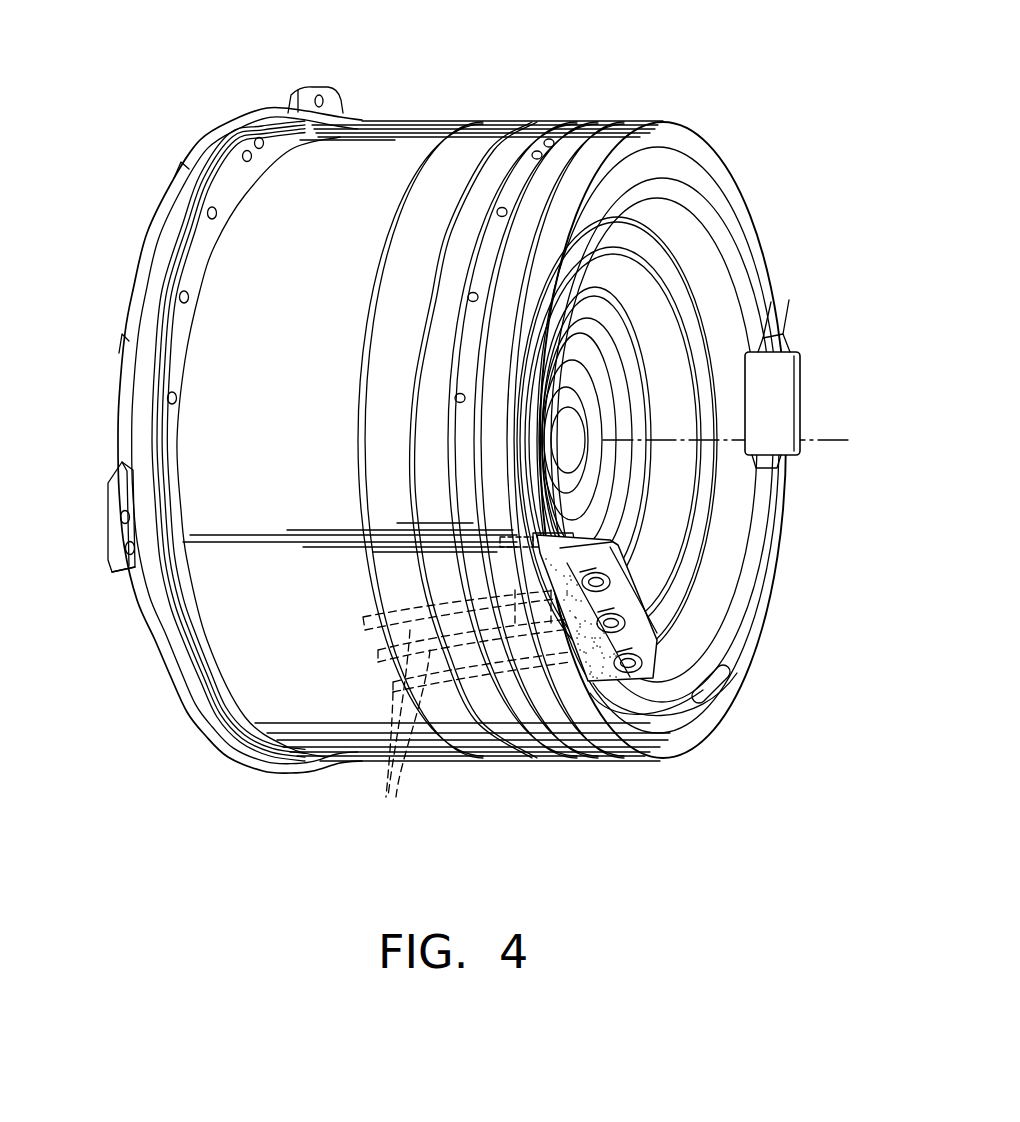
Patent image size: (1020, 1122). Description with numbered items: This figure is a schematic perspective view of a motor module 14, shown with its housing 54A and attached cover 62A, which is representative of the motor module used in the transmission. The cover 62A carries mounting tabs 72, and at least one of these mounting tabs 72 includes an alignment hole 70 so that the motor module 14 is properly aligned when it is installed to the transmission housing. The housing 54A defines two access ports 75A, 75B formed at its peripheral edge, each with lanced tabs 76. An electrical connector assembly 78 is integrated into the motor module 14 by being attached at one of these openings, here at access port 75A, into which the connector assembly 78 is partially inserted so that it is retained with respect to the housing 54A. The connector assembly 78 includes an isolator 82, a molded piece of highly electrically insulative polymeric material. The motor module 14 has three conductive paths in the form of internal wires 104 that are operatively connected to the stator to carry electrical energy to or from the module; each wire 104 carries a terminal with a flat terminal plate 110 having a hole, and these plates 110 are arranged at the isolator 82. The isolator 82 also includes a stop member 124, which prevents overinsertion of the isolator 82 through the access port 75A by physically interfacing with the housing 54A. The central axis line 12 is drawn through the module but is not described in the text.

The motor module 14 is at (178, 120).
The mounting tabs 72 is at (308, 90).
The housing 54A is at (387, 153).
The cover 62A is at (134, 283).
The stop member 124 is at (540, 537).
The alignment hole 70 is at (118, 556).
The internal wires 104 is at (466, 712).
The electrical connector assembly 78 is at (592, 688).
The access port 75A is at (655, 735).
The access port 75B is at (775, 345).
The isolator 82 is at (703, 697).
The flat terminal plate 110 is at (604, 582).
The motor axis 12 is at (846, 443).
The lanced tabs 76 is at (780, 393).